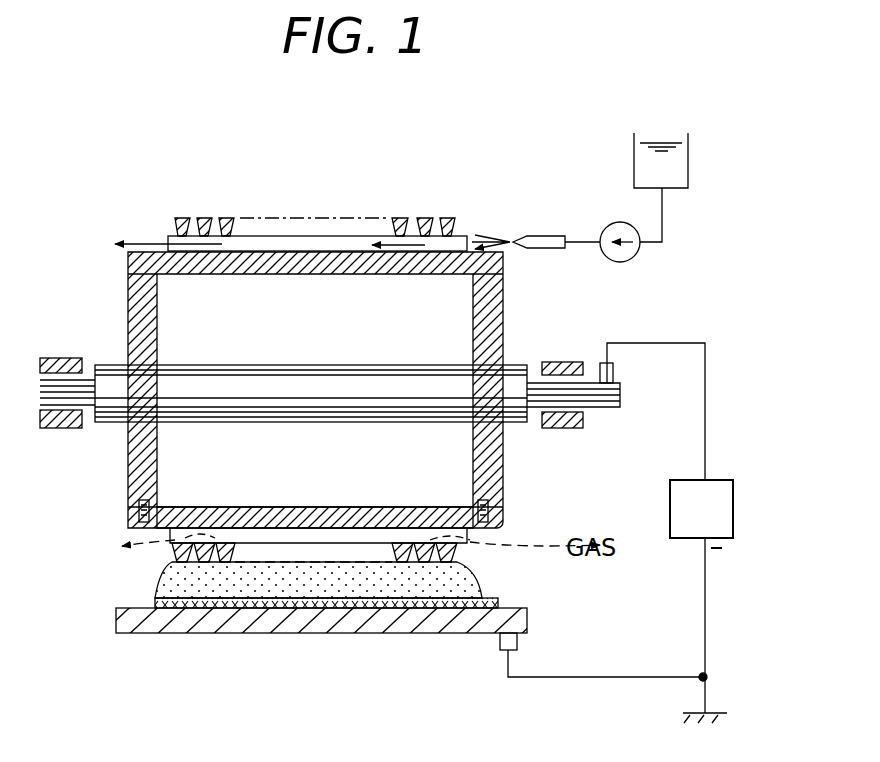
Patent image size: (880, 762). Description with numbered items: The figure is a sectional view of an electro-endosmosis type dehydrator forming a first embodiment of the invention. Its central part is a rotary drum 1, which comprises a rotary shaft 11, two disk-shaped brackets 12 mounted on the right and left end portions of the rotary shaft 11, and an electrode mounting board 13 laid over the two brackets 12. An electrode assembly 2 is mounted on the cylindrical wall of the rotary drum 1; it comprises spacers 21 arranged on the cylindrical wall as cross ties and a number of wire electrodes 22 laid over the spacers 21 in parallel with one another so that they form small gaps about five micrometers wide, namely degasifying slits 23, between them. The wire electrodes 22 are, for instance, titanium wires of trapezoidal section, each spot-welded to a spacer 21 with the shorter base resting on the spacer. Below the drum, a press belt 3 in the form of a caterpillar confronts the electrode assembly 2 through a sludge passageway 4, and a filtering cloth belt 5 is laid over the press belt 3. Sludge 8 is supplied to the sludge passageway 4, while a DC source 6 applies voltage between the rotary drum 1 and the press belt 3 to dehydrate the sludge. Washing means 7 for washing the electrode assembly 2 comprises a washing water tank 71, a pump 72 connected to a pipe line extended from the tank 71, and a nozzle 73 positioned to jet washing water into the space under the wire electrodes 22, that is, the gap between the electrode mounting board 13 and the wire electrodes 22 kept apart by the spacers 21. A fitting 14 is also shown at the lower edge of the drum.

The rotary drum 1 is at (126, 326).
The electrode assembly 2 is at (309, 177).
The press belt 3 is at (140, 626).
The sludge passageway 4 is at (160, 578).
The filtering cloth belt 5 is at (500, 606).
The DC source 6 is at (683, 478).
The washing means 7 is at (662, 210).
The sludge 8 is at (470, 575).
The rotary shaft 11 is at (105, 405).
The disk-shaped brackets 12 is at (128, 478).
The electrode mounting board 13 is at (325, 512).
The outlet fitting 14 is at (475, 536).
The spacers 21 is at (462, 236).
The wire electrodes 22 is at (226, 216).
The degasifying slits 23 is at (401, 214).
The washing water tank 71 is at (688, 150).
The pump 72 is at (632, 258).
The nozzle 73 is at (545, 250).